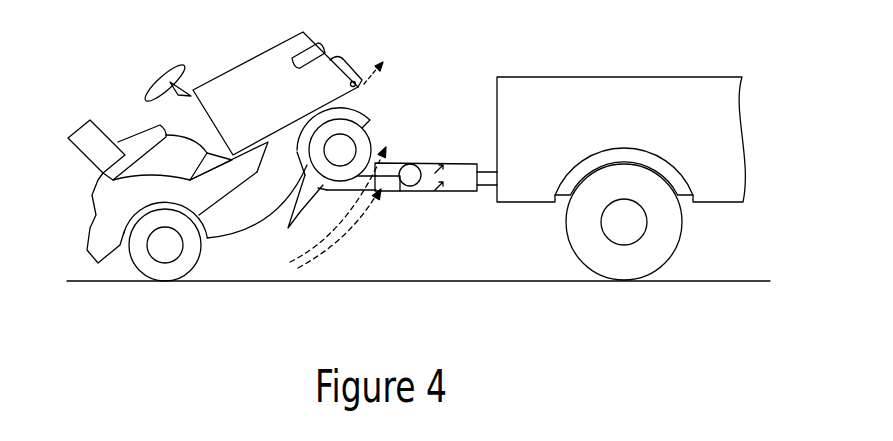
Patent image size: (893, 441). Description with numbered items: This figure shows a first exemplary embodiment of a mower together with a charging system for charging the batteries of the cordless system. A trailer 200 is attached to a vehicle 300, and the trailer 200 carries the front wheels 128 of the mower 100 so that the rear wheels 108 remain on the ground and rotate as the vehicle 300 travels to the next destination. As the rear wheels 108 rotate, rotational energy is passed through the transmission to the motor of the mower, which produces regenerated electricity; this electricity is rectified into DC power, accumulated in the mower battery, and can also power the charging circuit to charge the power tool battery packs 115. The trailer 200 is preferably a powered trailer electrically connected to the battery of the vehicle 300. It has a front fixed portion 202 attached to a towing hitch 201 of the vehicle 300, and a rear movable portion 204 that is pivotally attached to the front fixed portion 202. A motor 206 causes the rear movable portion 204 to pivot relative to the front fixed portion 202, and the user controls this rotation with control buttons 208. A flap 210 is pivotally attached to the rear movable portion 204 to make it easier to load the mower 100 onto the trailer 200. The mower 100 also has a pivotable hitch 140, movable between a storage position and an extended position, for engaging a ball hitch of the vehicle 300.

The mower 100 is at (280, 55).
The rear wheels 108 is at (188, 263).
The power tool battery packs 115 is at (93, 230).
The front wheels 128 is at (371, 138).
The pivotable hitch 140 is at (348, 73).
The trailer 200 is at (432, 183).
The towing hitch 201 is at (482, 186).
The front fixed portion 202 is at (466, 163).
The rear movable portion 204 is at (393, 163).
The motor 206 is at (406, 186).
The control buttons 208 is at (440, 192).
The flap 210 is at (308, 207).
The vehicle 300 is at (567, 92).